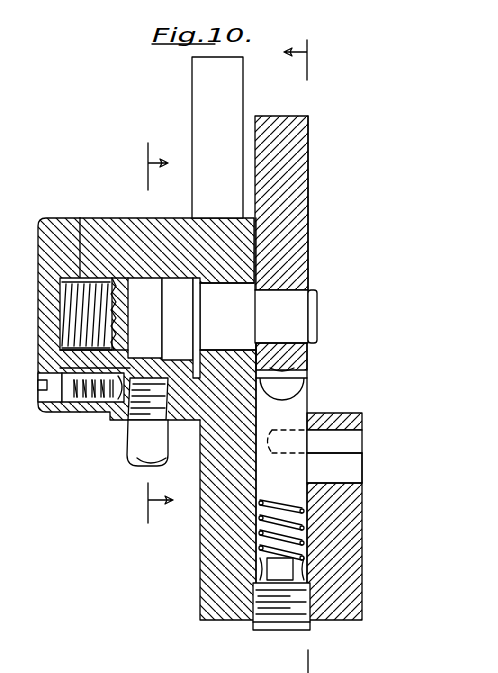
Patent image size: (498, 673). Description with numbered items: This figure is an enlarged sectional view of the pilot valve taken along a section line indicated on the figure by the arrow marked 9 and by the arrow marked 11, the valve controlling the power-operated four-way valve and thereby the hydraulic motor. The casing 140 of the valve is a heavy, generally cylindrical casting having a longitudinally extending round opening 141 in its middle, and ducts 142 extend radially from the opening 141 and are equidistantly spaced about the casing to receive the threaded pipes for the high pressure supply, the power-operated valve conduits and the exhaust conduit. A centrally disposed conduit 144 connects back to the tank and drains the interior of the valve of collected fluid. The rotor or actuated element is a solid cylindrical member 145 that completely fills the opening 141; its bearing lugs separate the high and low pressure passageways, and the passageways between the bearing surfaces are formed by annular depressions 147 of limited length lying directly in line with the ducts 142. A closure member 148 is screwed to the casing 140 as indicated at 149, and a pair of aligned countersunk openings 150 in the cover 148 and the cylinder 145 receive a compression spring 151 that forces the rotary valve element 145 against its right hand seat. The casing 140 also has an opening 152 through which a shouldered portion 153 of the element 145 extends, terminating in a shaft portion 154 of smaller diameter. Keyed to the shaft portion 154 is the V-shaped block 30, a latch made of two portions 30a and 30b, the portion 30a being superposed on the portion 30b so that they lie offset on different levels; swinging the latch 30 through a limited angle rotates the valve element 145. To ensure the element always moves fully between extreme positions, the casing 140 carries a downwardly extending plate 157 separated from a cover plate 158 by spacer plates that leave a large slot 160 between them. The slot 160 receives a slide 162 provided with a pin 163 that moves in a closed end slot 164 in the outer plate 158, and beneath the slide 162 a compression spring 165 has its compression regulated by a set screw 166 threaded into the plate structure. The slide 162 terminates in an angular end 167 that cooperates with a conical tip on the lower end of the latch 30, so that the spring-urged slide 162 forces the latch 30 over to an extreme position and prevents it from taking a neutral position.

The section line 9 is at (305, 58).
The rack 11 is at (154, 332).
The V-shaped block 30 is at (308, 174).
The portion of block 30a is at (303, 104).
The portion of block 30b is at (198, 103).
The casing 140 is at (92, 218).
The round opening 141 is at (122, 278).
The ducts 142 is at (166, 661).
The centrally disposed conduit 144 is at (136, 445).
The solid cylindrical member 145 is at (82, 284).
The annular depressions 147 is at (142, 278).
The closure member 148 is at (40, 264).
The screw connection 149 is at (40, 393).
The countersunk openings 150 is at (40, 360).
The compression spring 151 is at (62, 323).
The opening 152 is at (227, 297).
The shouldered portion 153 is at (240, 332).
The shaft portion 154 is at (300, 327).
The downwardly extending plate 157 is at (202, 541).
The cover plate 158 is at (355, 571).
The slot 160 is at (258, 556).
The slide 162 is at (292, 429).
The pin 163 is at (333, 444).
The closed end slot 164 is at (352, 475).
The compression spring 165 is at (286, 504).
The set screw 166 is at (272, 632).
The angular end 167 is at (285, 388).